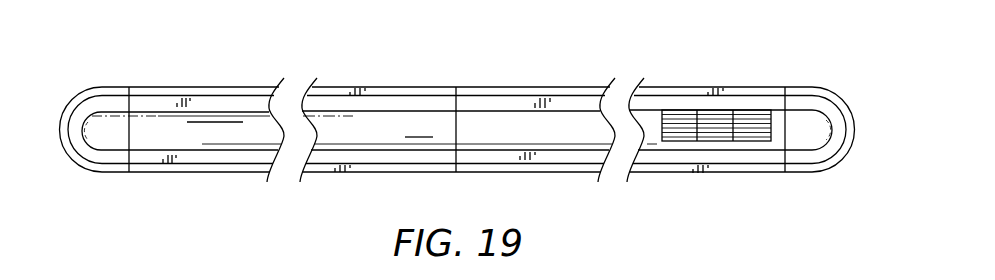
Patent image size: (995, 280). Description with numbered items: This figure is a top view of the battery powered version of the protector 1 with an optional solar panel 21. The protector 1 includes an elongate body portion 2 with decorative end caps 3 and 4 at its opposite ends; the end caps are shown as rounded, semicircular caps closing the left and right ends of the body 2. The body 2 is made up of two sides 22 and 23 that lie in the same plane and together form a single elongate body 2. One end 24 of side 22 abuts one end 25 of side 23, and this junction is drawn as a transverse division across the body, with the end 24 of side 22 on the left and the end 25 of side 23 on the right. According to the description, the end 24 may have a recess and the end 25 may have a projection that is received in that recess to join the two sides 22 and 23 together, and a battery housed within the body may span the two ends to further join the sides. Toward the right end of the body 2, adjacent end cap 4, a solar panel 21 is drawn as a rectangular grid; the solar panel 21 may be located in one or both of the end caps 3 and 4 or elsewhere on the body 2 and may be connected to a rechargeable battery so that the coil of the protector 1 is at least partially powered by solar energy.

The protector 1 is at (168, 214).
The body portion 2 is at (240, 117).
The end cap 3 is at (103, 118).
The end cap 4 is at (809, 120).
The solar panel 21 is at (747, 122).
The side 22 is at (337, 123).
The side 23 is at (568, 118).
The end 24 is at (456, 125).
The end 25 is at (457, 118).